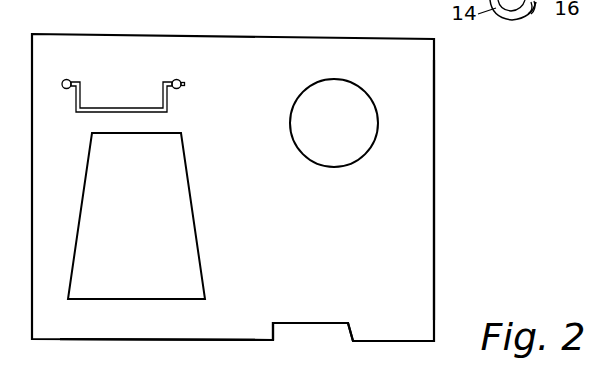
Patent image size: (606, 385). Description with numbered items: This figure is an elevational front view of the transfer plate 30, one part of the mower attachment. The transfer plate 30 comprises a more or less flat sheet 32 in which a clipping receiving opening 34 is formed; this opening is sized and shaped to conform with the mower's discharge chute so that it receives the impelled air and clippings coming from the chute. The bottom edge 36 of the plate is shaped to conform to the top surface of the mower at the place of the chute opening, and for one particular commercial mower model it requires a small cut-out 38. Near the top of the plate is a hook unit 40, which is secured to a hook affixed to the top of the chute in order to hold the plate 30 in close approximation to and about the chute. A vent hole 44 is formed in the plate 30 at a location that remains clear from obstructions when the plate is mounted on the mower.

The transfer plate 30 is at (438, 212).
The flat sheet 32 is at (409, 146).
The clipping receiving opening 34 is at (117, 232).
The bottom edge 36 is at (183, 341).
The cut-out 38 is at (326, 323).
The hook unit 40 is at (102, 110).
The vent hole 44 is at (316, 131).